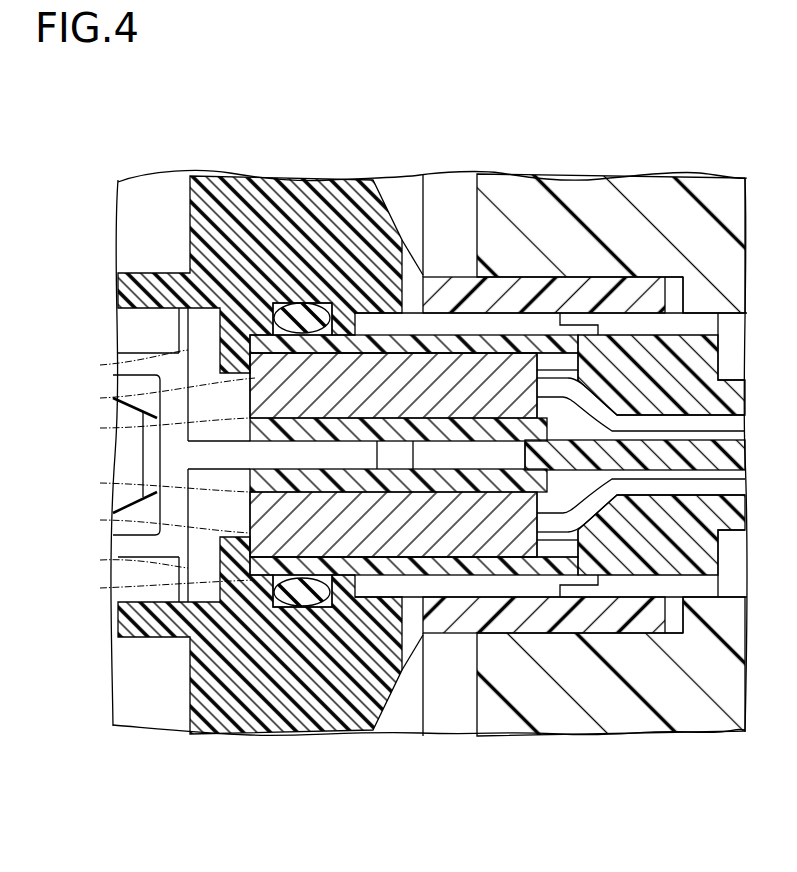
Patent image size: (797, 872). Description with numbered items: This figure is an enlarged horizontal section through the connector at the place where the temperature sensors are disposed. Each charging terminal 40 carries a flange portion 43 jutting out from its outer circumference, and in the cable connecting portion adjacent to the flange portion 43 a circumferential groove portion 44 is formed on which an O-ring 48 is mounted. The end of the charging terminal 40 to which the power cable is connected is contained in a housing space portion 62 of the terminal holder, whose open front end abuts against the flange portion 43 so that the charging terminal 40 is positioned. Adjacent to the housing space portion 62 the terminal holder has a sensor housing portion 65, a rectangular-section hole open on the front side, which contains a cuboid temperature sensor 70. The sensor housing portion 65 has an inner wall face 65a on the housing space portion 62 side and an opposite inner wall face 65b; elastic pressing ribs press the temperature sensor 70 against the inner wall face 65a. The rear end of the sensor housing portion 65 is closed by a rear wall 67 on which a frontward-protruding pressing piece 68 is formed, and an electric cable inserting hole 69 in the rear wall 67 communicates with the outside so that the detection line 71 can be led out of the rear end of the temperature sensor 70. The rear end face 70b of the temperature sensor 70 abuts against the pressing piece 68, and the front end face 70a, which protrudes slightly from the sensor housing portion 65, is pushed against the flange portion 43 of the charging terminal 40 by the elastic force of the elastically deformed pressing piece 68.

The charging terminal 40 is at (228, 180).
The flange portion 43 is at (252, 341).
The groove portion 44 is at (338, 338).
The O-ring 48 is at (290, 314).
The housing space portion 62 is at (553, 300).
The sensor housing portion 65 is at (250, 430).
The inner wall face 65a is at (395, 352).
The inner wall face 65b is at (485, 356).
The rear wall 67 is at (640, 352).
The pressing piece 68 is at (605, 400).
The electric cable inserting hole 69 is at (742, 395).
The temperature sensor 70 is at (250, 410).
The front end face 70a is at (258, 380).
The rear end face 70b is at (572, 378).
The detection line 71 is at (728, 340).